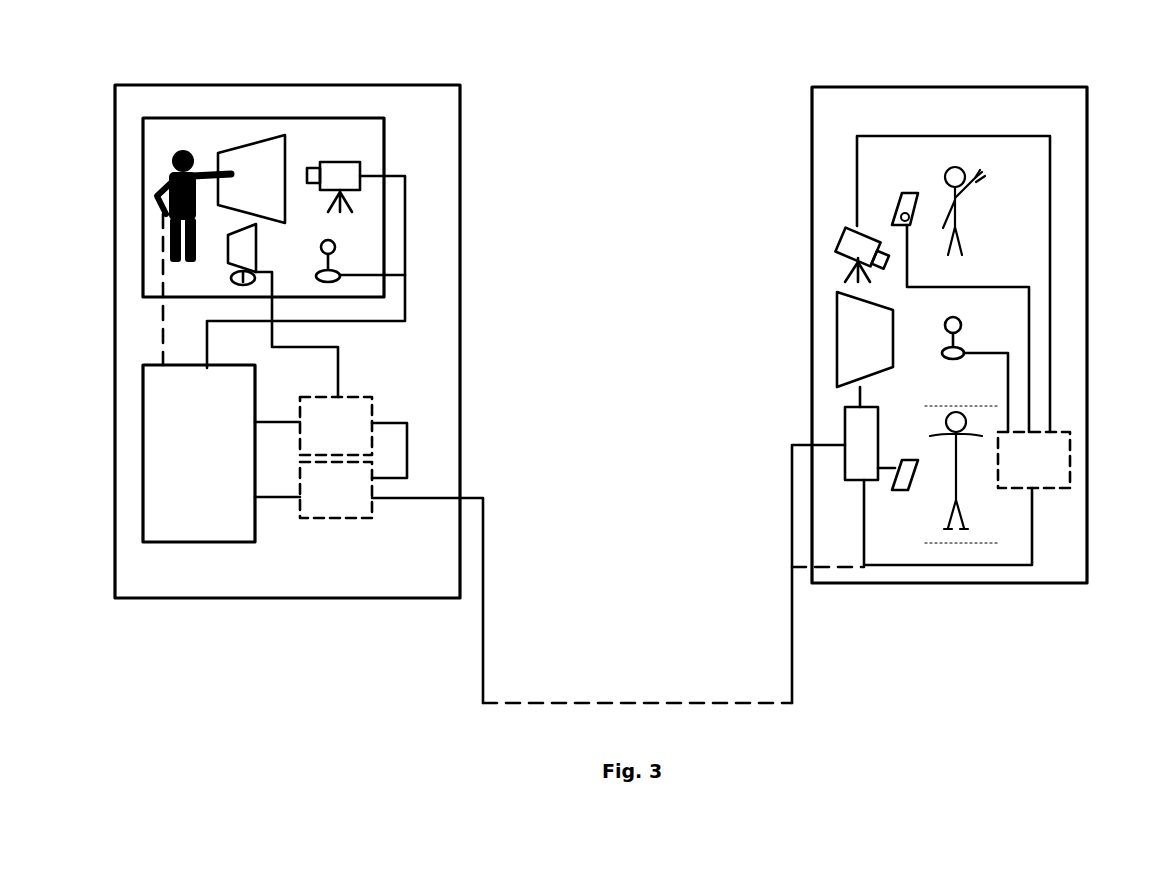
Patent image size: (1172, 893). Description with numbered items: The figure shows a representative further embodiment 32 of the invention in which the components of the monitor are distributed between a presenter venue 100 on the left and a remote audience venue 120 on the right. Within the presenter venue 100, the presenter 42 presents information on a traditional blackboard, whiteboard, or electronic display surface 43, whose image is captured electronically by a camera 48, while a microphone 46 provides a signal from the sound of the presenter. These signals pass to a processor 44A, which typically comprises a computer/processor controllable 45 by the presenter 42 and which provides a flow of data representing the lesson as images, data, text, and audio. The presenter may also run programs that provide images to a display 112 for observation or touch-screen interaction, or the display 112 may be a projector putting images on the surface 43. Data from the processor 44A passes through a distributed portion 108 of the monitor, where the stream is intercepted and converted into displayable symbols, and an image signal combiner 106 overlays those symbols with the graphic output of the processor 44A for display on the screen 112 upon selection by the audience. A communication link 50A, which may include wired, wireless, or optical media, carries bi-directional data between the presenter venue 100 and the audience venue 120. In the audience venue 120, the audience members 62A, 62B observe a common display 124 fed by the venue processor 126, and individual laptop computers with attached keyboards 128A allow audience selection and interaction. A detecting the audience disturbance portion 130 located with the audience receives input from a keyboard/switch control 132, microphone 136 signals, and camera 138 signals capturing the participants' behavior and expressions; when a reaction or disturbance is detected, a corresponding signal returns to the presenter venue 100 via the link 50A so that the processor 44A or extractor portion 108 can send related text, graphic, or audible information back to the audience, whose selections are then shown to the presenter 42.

The presenter venue 100 is at (160, 85).
The presenter 42 is at (167, 233).
The electronic display surface 43 is at (268, 135).
The camera 48 is at (347, 162).
The display 112 is at (232, 262).
The microphone 46 is at (345, 272).
The computer/processor controllable 45 is at (162, 330).
The processor 44A is at (143, 408).
The image signal combiner 106 is at (360, 397).
The distributed portion of the monitor 108 is at (350, 518).
The communication link 50A is at (660, 702).
The further embodiment 32 is at (396, 685).
The audience venue 120 is at (985, 87).
The keyboard/switch control 132 is at (902, 193).
The audience member 62A is at (962, 165).
The camera 138 is at (838, 252).
The common display 124 is at (837, 333).
The venue processor 126 is at (845, 468).
The keyboard 128A is at (905, 493).
The microphone 136 is at (963, 347).
The detecting the audience disturbance portion 130 is at (1052, 488).
The audience member 62B is at (988, 540).